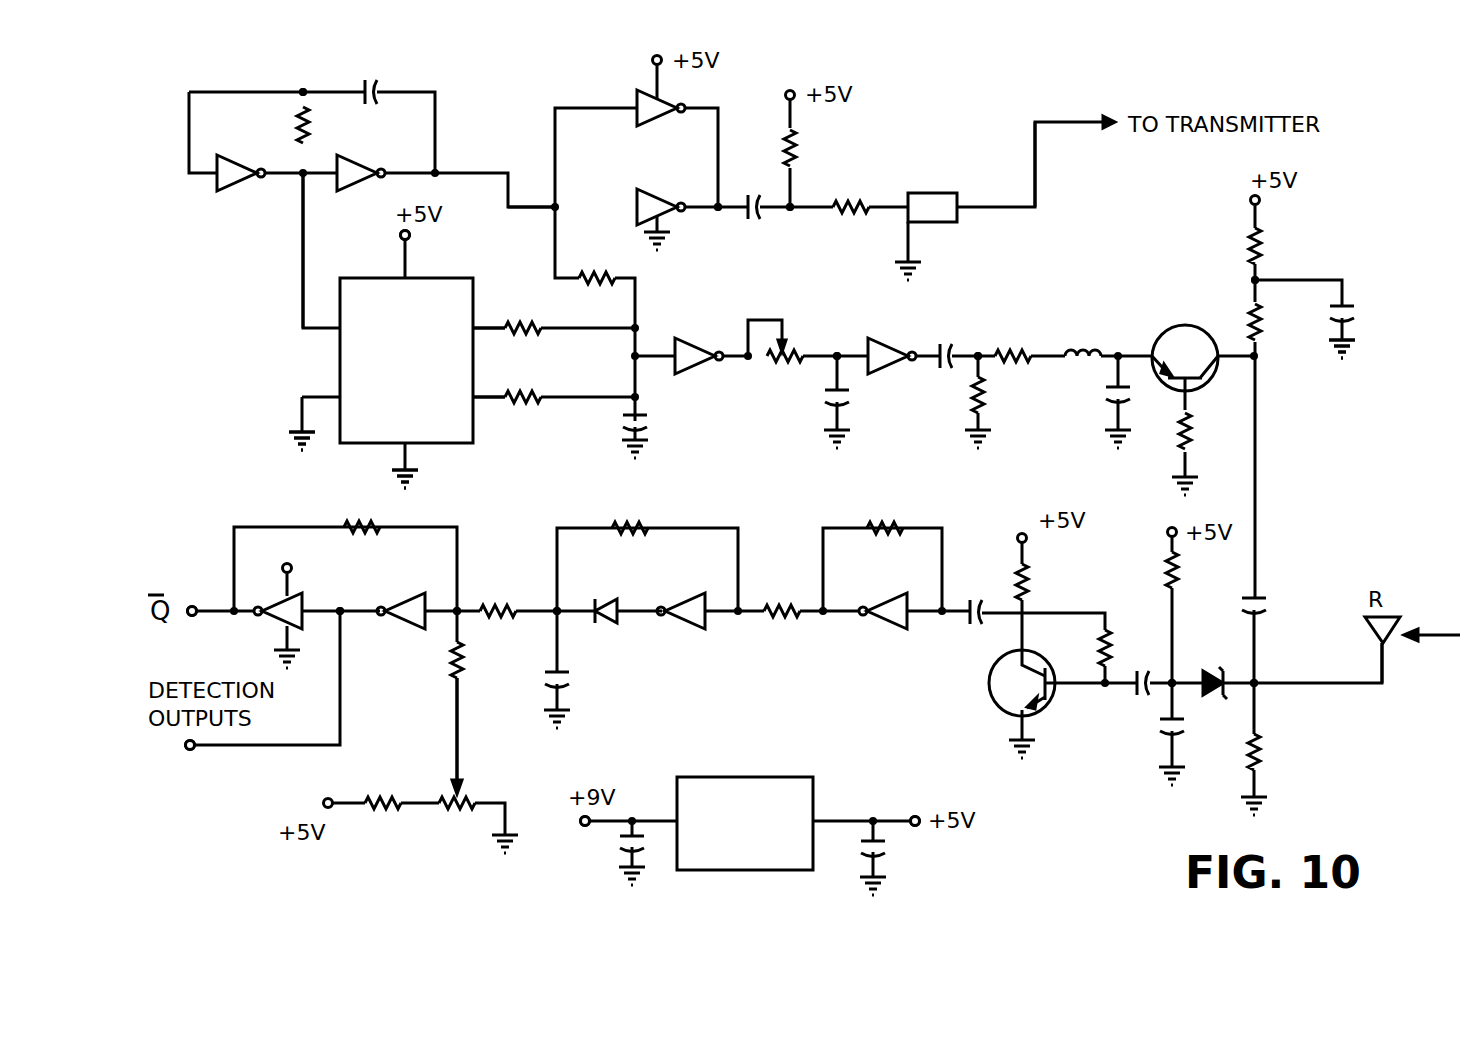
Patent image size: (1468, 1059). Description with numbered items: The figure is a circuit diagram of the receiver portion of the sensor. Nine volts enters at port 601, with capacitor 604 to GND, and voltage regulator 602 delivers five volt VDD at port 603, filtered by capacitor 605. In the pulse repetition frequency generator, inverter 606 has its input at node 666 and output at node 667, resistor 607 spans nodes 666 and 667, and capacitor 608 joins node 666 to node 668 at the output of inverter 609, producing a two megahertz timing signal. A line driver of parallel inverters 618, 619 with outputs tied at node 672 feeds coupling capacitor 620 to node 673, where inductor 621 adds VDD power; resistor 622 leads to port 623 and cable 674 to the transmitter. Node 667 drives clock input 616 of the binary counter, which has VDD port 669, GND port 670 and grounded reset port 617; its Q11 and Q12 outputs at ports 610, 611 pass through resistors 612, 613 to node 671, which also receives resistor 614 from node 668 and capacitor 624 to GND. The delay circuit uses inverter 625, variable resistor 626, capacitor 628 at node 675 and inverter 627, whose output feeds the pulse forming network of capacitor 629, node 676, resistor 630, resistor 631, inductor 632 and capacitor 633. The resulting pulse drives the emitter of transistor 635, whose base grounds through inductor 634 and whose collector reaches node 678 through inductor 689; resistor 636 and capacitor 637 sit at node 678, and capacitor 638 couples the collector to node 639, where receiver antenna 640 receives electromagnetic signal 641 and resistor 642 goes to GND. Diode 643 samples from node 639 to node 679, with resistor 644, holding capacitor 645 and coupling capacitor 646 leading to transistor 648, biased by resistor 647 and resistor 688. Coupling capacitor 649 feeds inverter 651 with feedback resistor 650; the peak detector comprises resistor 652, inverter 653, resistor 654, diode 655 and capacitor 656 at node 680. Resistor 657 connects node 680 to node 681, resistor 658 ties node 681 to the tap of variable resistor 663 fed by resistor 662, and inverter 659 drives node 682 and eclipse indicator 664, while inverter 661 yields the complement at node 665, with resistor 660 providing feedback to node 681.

The port 601 is at (581, 820).
The voltage regulator 602 is at (759, 777).
The port 603 is at (910, 816).
The capacitor 604 is at (615, 840).
The capacitor 605 is at (898, 848).
The inverter 606 is at (236, 182).
The resistor 607 is at (293, 129).
The capacitor 608 is at (389, 86).
The inverter 609 is at (372, 154).
The Q11 output port 610 is at (496, 328).
The Q12 output port 611 is at (502, 397).
The resistor 612 is at (526, 328).
The resistor 613 is at (542, 405).
The resistor 614 is at (597, 272).
The clock input 616 is at (303, 286).
The reset port 617 is at (292, 402).
The inverter 618 is at (630, 93).
The inverter 619 is at (638, 196).
The coupling capacitor 620 is at (754, 195).
The inductor 621 is at (795, 152).
The resistor 622 is at (856, 209).
The port 623 is at (942, 191).
The capacitor 624 is at (648, 431).
The inverter 625 is at (696, 340).
The variable resistor 626 is at (778, 362).
The inverter 627 is at (906, 343).
The capacitor 628 is at (829, 400).
The capacitor 629 is at (941, 364).
The resistor 630 is at (986, 406).
The resistor 631 is at (1014, 343).
The inductor 632 is at (1078, 325).
The capacitor 633 is at (1110, 405).
The inductor 634 is at (1210, 438).
The npn bipolar junction transistor 635 is at (1215, 386).
The resistor 636 is at (1265, 250).
The capacitor 637 is at (1350, 302).
The capacitor 638 is at (1258, 596).
The node 639 is at (1259, 680).
The receiver antenna 640 is at (1390, 611).
The electromagnetic signal 641 is at (1439, 641).
The resistor 642 is at (1253, 752).
The diode 643 is at (1227, 688).
The resistor 644 is at (1161, 571).
The holding capacitor 645 is at (1161, 735).
The coupling capacitor 646 is at (1132, 698).
The resistor 647 is at (1100, 667).
The npn bipolar junction transistor 648 is at (1002, 718).
The coupling capacitor 649 is at (986, 628).
The resistor 650 is at (892, 527).
The inverter 651 is at (884, 622).
The resistor 652 is at (786, 627).
The inverter 653 is at (698, 624).
The resistor 654 is at (647, 527).
The diode 655 is at (608, 618).
The capacitor 656 is at (567, 680).
The resistor 657 is at (499, 610).
The resistor 658 is at (447, 668).
The inverter 659 is at (406, 625).
The resistor 660 is at (360, 525).
The inverter 661 is at (272, 621).
The resistor 662 is at (383, 796).
The variable resistor 663 is at (453, 806).
The eclipse indicator 664 is at (195, 750).
The node 665 is at (192, 606).
The node 666 is at (300, 90).
The node 667 is at (307, 180).
The node 668 is at (548, 203).
The port 669 is at (408, 261).
The port 670 is at (407, 460).
The node 671 is at (635, 356).
The node 672 is at (718, 212).
The node 673 is at (791, 210).
The cable 674 is at (1034, 183).
The node 675 is at (837, 347).
The node 676 is at (975, 324).
The node 678 is at (1250, 278).
The node 679 is at (1174, 680).
The node 680 is at (560, 608).
The node 681 is at (455, 606).
The node 682 is at (340, 609).
The resistor 688 is at (1026, 574).
The inductor 689 is at (1258, 322).